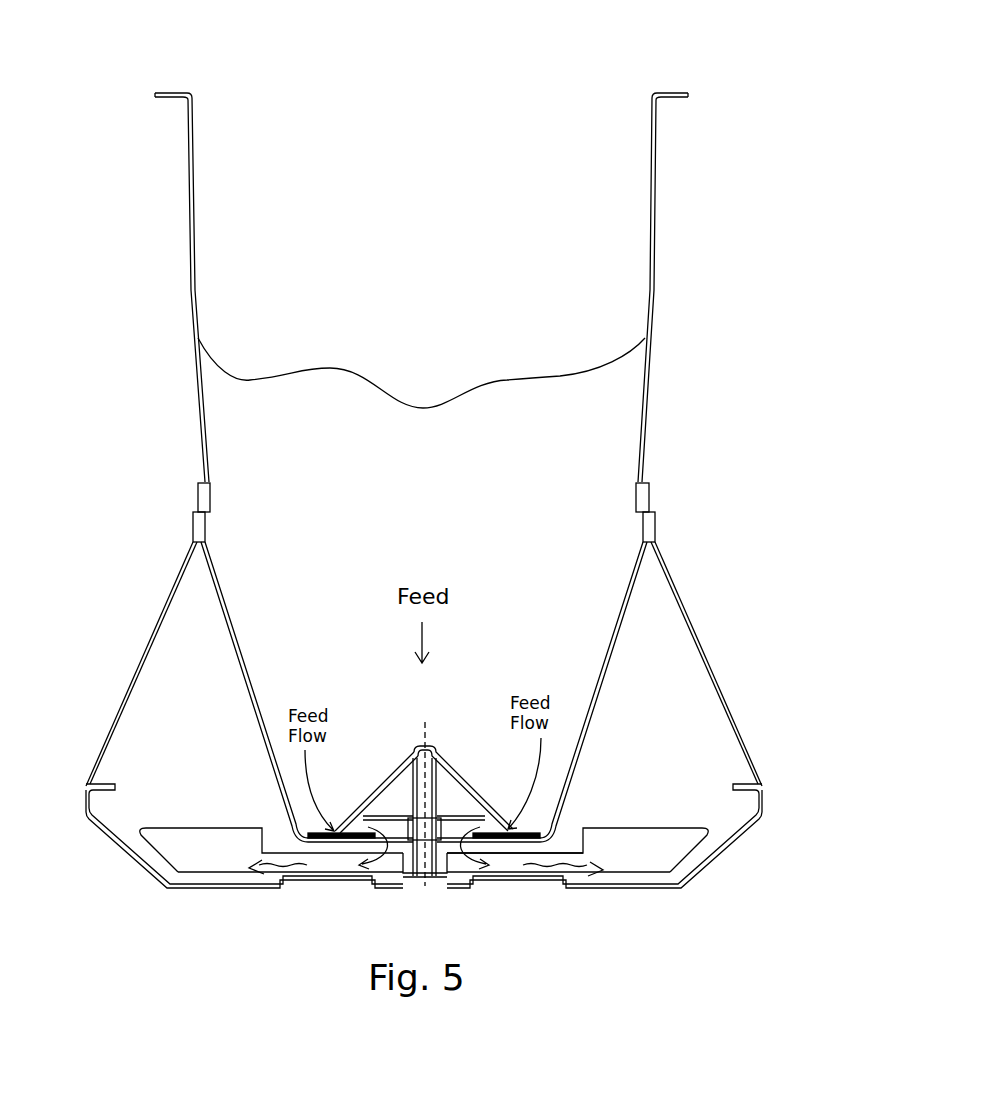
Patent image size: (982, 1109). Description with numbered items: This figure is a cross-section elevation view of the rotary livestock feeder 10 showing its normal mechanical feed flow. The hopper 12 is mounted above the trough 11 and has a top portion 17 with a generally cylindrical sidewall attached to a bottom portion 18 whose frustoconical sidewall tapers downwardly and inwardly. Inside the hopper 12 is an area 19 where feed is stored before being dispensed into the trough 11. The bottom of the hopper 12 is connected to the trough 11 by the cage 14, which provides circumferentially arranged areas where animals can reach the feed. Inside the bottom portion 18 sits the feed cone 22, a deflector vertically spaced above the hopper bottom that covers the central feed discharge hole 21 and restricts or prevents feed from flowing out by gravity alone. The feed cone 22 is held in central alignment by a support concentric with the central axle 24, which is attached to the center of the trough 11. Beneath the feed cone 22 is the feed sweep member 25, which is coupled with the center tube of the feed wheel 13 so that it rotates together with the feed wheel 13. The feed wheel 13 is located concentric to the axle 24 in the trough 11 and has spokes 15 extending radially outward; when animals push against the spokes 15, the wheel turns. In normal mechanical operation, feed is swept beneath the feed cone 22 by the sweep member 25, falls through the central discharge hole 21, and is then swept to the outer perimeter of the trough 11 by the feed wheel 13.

The rotary livestock feeder 10 is at (697, 252).
The trough 11 is at (122, 843).
The hopper 12 is at (650, 428).
The feed wheel 13 is at (672, 855).
The cage 14 is at (700, 628).
The spokes 15 is at (552, 852).
The top portion 17 is at (193, 253).
The bottom portion 18 is at (228, 641).
The area 19 is at (334, 150).
The central feed discharge hole 21 is at (452, 845).
The feed cone 22 is at (440, 770).
The central axle 24 is at (425, 843).
The feed sweep member 25 is at (312, 830).